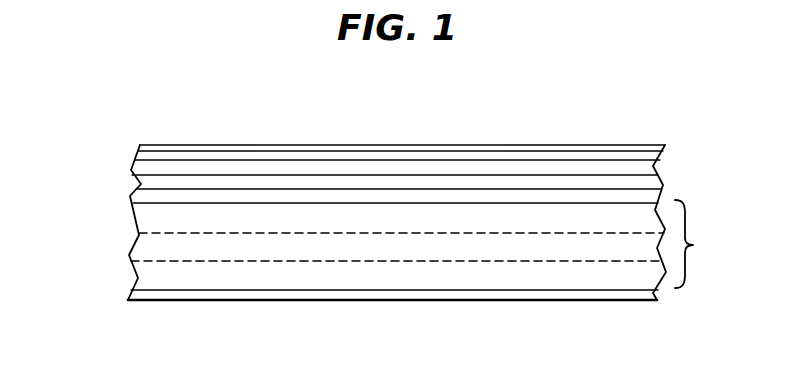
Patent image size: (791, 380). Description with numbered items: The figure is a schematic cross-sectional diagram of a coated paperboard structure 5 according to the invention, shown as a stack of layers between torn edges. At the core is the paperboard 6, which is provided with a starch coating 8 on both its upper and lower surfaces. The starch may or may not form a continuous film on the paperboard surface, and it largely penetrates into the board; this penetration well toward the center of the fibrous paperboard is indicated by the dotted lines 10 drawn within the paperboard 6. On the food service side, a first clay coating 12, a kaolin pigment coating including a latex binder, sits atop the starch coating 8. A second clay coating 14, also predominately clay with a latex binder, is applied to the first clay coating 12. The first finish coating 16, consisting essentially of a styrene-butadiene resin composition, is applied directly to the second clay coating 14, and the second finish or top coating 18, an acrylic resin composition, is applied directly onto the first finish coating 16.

The coated paperboard structure 5 is at (507, 119).
The paperboard 6 is at (692, 244).
The starch coating 8 is at (141, 200).
The dotted lines 10 is at (270, 262).
The first clay coating 12 is at (141, 187).
The second clay coating 14 is at (247, 168).
The first finish coating 16 is at (345, 156).
The second finish coating 18 is at (398, 150).